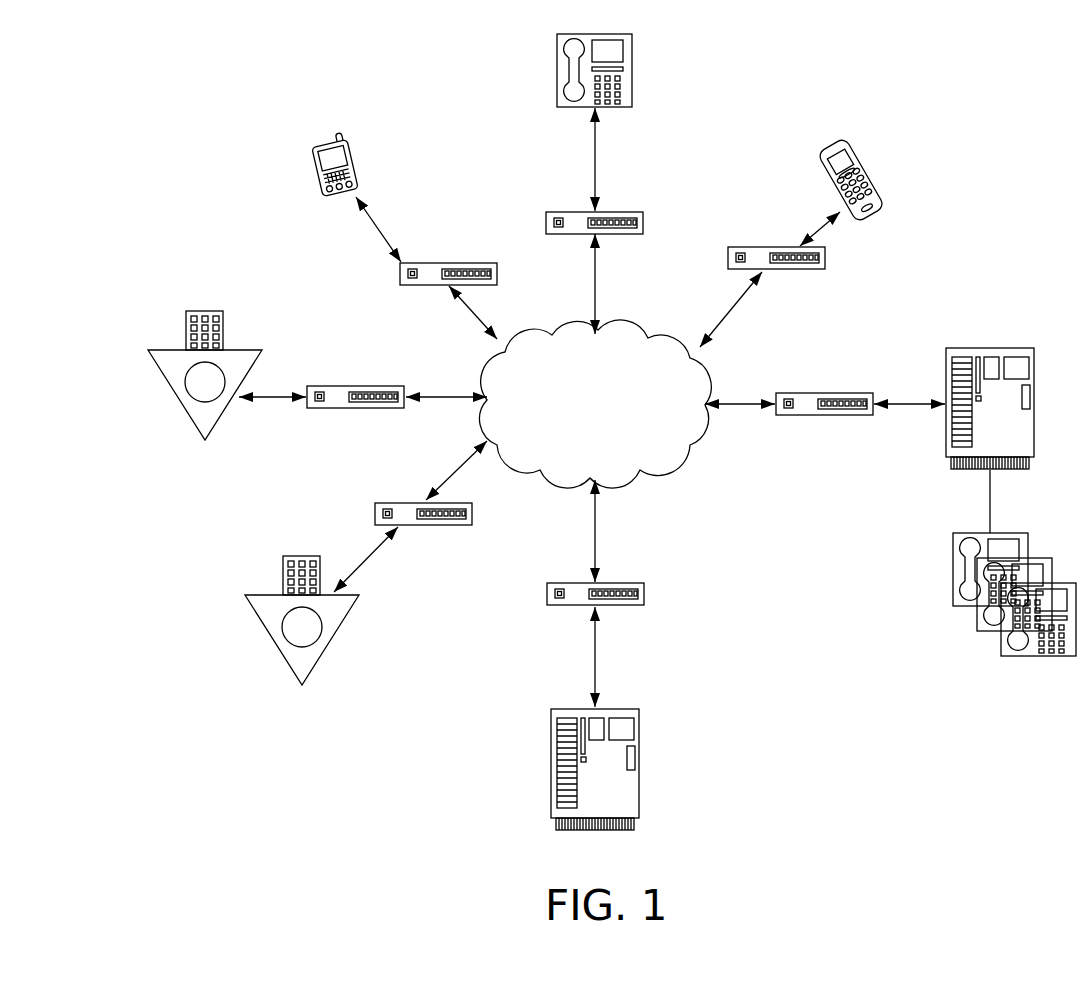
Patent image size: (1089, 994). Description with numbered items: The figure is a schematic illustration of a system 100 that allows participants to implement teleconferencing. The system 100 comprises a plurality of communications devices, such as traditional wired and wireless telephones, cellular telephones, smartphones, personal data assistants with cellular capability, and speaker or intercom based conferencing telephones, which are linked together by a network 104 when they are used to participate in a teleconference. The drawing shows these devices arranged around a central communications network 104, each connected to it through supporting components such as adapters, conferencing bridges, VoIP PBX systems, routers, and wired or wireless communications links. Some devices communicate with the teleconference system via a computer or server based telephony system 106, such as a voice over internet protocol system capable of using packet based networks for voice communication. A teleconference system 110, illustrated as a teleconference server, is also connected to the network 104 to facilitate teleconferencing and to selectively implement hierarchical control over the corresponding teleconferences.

The system 100 is at (160, 143).
The network 104 is at (655, 463).
The computer or server based telephony systems 106 is at (972, 348).
The teleconference system 110 is at (564, 709).